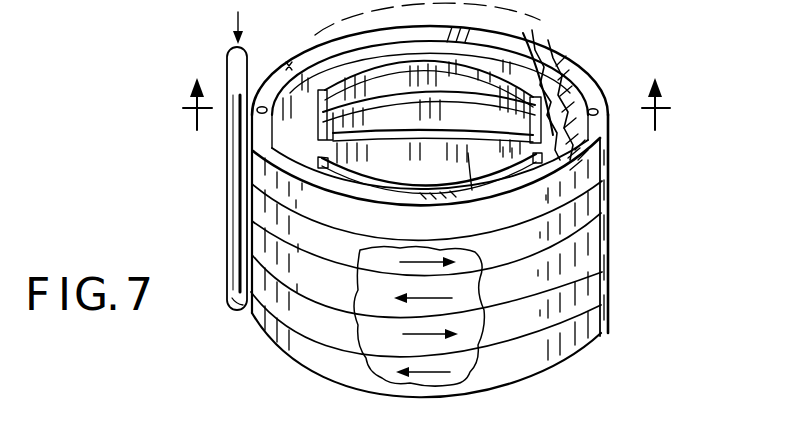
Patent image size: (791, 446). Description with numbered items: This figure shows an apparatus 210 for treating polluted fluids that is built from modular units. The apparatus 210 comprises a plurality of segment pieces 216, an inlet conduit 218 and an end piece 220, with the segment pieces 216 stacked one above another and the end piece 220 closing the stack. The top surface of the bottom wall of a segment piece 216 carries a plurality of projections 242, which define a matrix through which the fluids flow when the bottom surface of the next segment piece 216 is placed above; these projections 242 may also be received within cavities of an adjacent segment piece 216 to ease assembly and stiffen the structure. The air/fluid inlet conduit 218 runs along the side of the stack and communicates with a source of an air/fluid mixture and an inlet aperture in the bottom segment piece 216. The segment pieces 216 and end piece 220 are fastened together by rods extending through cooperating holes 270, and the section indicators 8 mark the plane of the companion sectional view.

The apparatus 210 is at (652, 261).
The segment pieces 216 is at (580, 328).
The inlet conduit 218 is at (237, 243).
The end piece 220 is at (547, 57).
The projections 242 is at (475, 115).
The cooperating holes 270 is at (257, 108).
The section view indicator 8 is at (426, 120).